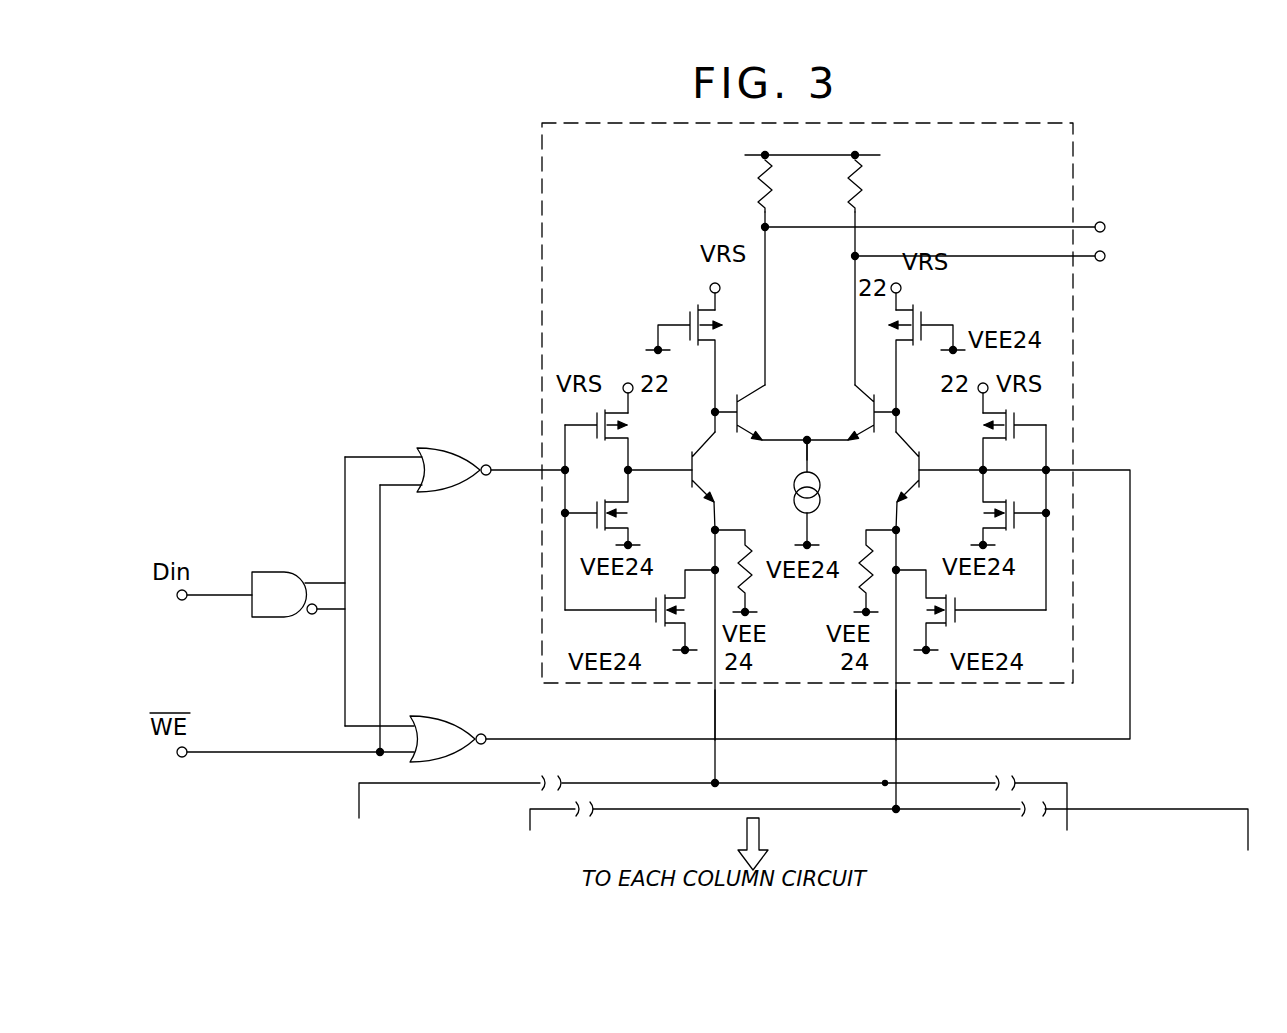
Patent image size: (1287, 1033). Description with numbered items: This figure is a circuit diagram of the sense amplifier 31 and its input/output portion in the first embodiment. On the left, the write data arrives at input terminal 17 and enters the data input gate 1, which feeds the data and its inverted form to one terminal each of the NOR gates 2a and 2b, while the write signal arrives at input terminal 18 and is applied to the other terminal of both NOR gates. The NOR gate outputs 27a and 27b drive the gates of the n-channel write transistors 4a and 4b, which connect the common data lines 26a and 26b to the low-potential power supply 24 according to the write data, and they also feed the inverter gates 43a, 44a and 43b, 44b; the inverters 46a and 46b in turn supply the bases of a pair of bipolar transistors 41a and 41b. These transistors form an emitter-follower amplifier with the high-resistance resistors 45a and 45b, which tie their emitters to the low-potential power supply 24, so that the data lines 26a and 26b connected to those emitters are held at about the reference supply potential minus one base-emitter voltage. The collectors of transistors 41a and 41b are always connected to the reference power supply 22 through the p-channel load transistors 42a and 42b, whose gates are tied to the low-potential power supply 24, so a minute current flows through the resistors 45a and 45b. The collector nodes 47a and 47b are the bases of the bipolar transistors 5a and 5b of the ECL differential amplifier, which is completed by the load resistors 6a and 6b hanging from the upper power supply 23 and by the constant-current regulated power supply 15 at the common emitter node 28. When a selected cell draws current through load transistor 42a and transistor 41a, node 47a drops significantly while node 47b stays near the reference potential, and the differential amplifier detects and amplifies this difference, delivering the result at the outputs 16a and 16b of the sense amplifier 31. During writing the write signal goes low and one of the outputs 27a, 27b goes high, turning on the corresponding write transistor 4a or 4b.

The data input gate 1 is at (290, 573).
The NOR gate 2a is at (458, 448).
The NOR gate 2b is at (443, 717).
The write transistor 4a is at (668, 632).
The write transistor 4b is at (933, 632).
The bipolar transistor 5a is at (761, 412).
The bipolar transistor 5b is at (851, 412).
The load resistor 6a is at (782, 186).
The load resistor 6b is at (872, 186).
The constant-current regulated power supply 15 is at (824, 494).
The output 16a is at (963, 228).
The output 16b is at (1008, 257).
The data input terminal 17 is at (211, 608).
The write enable input terminal 18 is at (288, 765).
The VRS power supply 22 is at (732, 292).
The VCC power supply 23 is at (812, 141).
The VEE power supply 24 is at (611, 340).
The common data line 26a is at (713, 712).
The common data line 26b is at (898, 732).
The output 27a is at (510, 474).
The output 27b is at (1132, 540).
The common emitter node 28 is at (827, 457).
The sense amplifier 31 is at (1075, 210).
The bipolar transistor 41a is at (719, 481).
The bipolar transistor 41b is at (890, 481).
The load transistor 42a is at (690, 318).
The load transistor 42b is at (921, 318).
The inverter gate 43a is at (622, 440).
The inverter gate 43b is at (972, 426).
The inverter gate 44a is at (610, 534).
The inverter gate 44b is at (990, 534).
The resistor 45a is at (745, 548).
The resistor 45b is at (858, 597).
The inverter 46a is at (654, 472).
The inverter 46b is at (939, 472).
The node 47a is at (712, 408).
The node 47b is at (918, 408).